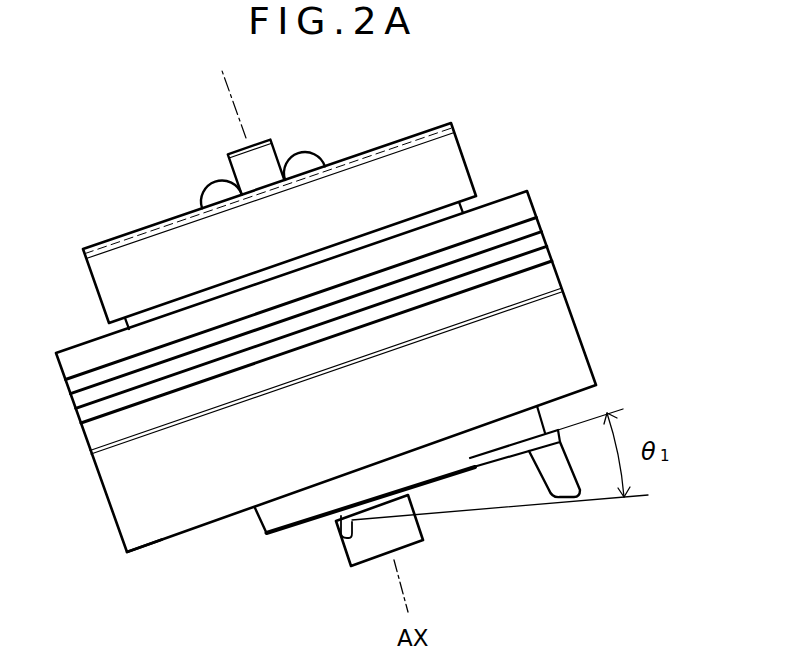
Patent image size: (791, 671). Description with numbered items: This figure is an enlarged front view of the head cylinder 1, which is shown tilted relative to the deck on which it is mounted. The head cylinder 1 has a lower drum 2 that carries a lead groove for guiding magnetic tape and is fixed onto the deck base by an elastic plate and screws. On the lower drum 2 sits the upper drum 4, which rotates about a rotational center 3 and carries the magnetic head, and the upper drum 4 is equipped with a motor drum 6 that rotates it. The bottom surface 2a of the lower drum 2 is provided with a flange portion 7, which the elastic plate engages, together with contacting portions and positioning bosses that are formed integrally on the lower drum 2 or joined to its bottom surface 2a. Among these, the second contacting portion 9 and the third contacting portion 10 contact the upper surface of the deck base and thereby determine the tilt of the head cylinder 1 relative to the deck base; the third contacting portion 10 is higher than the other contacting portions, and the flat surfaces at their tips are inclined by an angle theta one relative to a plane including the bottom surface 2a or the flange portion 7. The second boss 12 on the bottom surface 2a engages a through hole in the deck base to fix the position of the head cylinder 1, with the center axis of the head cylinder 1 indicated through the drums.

The head cylinder 1 is at (362, 370).
The lower drum 2 is at (563, 340).
The bottom surface of the lower drum 2a is at (166, 539).
The rotational center 3 is at (412, 547).
The upper drum 4 is at (333, 307).
The motor drum 6 is at (450, 165).
The flange portion 7 is at (557, 433).
The second contacting portion 9 is at (297, 523).
The third contacting portion 10 is at (563, 488).
The second boss 12 is at (345, 541).